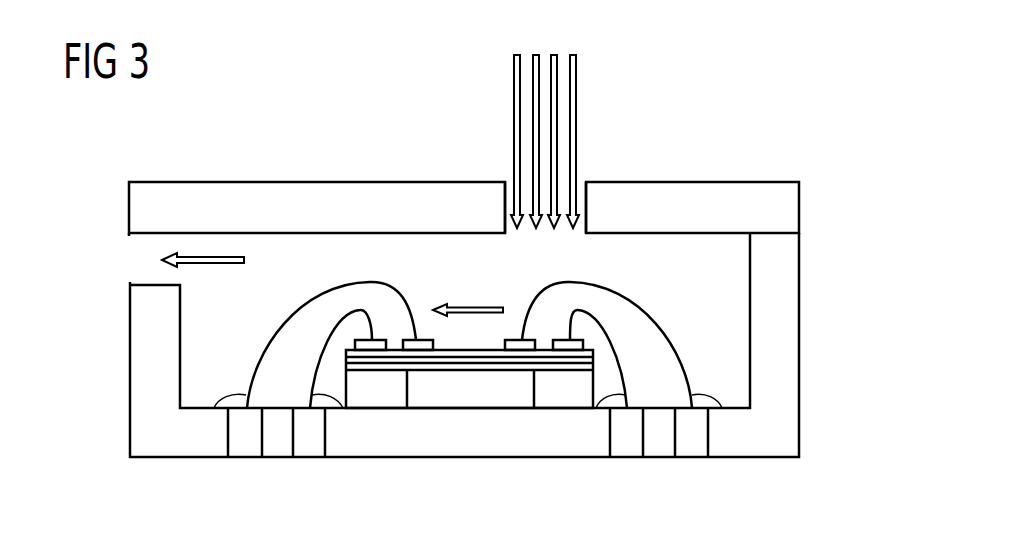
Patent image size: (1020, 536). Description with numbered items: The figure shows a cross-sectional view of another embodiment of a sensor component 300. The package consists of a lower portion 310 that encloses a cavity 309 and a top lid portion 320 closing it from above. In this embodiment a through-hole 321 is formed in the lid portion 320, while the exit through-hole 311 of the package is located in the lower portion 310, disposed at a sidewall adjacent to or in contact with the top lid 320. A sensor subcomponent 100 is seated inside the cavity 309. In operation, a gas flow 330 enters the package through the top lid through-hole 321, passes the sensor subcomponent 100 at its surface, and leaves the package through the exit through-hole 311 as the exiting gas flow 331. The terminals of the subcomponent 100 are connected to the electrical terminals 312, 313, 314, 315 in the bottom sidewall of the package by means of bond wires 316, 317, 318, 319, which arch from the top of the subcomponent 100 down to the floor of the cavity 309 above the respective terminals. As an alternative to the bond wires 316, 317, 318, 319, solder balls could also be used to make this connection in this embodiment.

The sensor subcomponent 100 is at (657, 322).
The sensor package 300 is at (748, 127).
The cavity 309 is at (658, 276).
The lower portion 310 is at (140, 355).
The exit through-hole 311 is at (140, 272).
The electrical terminal 312 is at (243, 447).
The electrical terminal 313 is at (307, 447).
The electrical terminal 314 is at (627, 447).
The electrical terminal 315 is at (690, 447).
The bond wire 316 is at (215, 410).
The bond wire 317 is at (343, 410).
The bond wire 318 is at (597, 410).
The bond wire 319 is at (720, 410).
The lid portion 320 is at (132, 207).
The through-hole 321 is at (585, 181).
The gas flow 330 is at (586, 92).
The exiting gas flow 331 is at (215, 266).